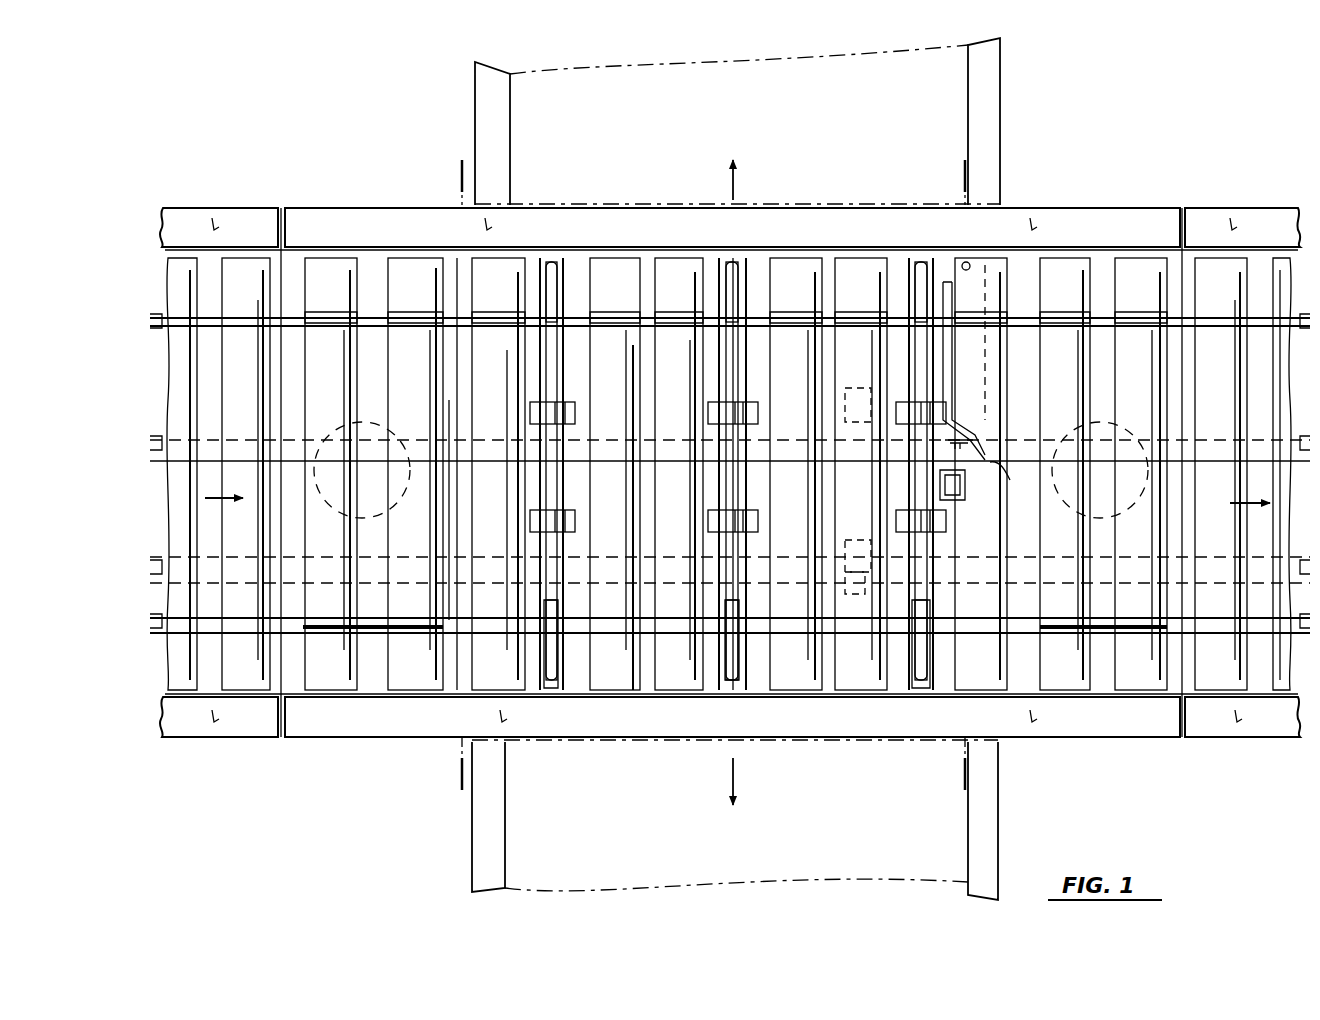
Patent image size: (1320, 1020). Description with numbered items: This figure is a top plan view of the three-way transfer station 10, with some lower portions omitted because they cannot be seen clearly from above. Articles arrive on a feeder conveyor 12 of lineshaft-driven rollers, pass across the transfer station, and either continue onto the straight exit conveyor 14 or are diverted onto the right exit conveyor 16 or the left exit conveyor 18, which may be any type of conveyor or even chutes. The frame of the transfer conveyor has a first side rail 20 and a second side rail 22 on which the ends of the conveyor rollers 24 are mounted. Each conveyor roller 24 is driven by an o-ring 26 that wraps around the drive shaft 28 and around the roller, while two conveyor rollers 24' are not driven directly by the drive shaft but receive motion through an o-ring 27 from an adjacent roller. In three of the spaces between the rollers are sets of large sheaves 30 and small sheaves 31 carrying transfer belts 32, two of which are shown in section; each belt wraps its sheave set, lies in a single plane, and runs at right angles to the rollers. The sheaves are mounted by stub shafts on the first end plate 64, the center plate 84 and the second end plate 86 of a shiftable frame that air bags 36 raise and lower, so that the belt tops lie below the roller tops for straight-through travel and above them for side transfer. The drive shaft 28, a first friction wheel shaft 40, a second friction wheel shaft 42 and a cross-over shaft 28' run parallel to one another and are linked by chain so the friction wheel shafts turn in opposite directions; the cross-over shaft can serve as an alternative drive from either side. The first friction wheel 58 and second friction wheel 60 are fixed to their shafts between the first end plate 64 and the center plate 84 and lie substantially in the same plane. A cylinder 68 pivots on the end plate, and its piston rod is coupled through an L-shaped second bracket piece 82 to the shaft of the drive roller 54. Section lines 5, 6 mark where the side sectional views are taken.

The section line 5- 5 is at (459, 172).
The section line 6- 6 is at (958, 172).
The transfer station 10 is at (316, 204).
The feeder conveyor 12 is at (196, 204).
The straight exit conveyor 14 is at (1252, 204).
The right exit conveyor 16 is at (965, 80).
The left exit conveyor 18 is at (965, 840).
The first side rail 20 is at (1078, 208).
The second side rail 22 is at (345, 737).
The conveyor rollers 24 is at (747, 467).
The conveyor rollers 24' is at (719, 472).
The o-rings 26 is at (318, 305).
The o-ring 27 is at (336, 632).
The drive shaft 28 is at (469, 515).
The cross-over shaft 28' is at (362, 432).
The large sheaves 30 is at (566, 275).
The small sheaves 31 is at (578, 468).
The transfer belts 32 is at (548, 258).
The air bags 36 is at (388, 428).
The first friction wheel shaft 40 is at (455, 590).
The second friction wheel shaft 42 is at (454, 432).
The drive roller 54 is at (742, 692).
The first friction wheel 58 is at (864, 600).
The second friction wheel 60 is at (848, 400).
The first end plate 64 is at (925, 692).
The cylinder 68 is at (925, 290).
The second bracket piece 82 is at (1010, 470).
The center plate 84 is at (726, 692).
The second end plate 86 is at (548, 692).